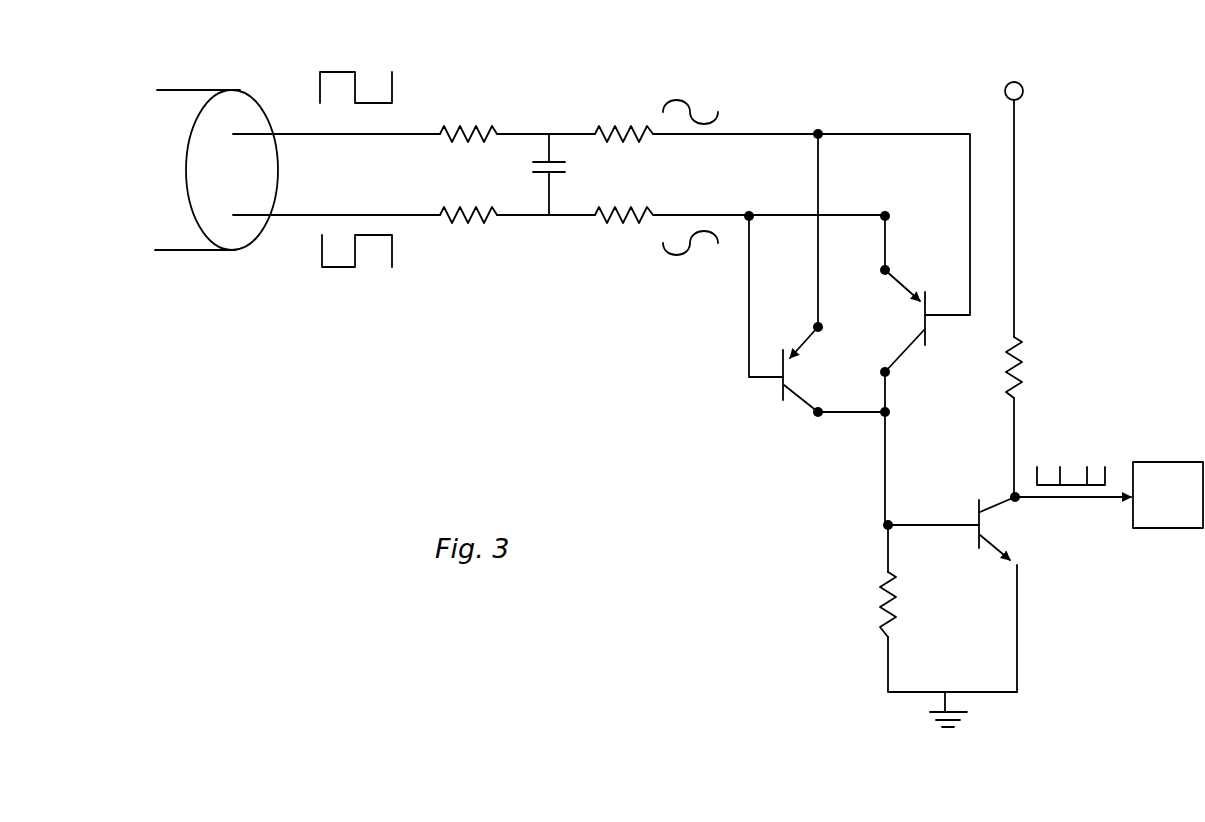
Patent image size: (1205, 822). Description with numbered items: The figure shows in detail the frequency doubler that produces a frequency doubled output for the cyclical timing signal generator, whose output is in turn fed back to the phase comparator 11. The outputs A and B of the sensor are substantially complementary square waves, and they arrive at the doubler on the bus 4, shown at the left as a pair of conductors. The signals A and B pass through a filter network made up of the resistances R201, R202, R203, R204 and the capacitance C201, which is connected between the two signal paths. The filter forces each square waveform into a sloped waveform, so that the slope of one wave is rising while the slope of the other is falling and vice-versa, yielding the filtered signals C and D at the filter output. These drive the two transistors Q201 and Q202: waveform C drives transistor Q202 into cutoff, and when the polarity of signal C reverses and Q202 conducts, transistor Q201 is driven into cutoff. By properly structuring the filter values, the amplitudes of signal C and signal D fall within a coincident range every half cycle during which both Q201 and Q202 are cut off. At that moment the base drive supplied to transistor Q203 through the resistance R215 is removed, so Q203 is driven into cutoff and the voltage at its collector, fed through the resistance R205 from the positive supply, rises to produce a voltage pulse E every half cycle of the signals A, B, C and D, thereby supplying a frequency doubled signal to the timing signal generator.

The bus 4 is at (246, 104).
The sensor output signal A is at (348, 72).
The sensor output signal B is at (340, 267).
The filtered waveform C is at (690, 105).
The filtered waveform D is at (690, 246).
The voltage pulse E is at (1062, 462).
The phase comparator 11 is at (1133, 522).
The resistance R201 is at (481, 118).
The resistance R202 is at (621, 118).
The resistance R203 is at (475, 228).
The resistance R204 is at (624, 228).
The capacitance C201 is at (575, 174).
The transistor Q201 is at (809, 281).
The transistor Q202 is at (934, 370).
The transistor Q203 is at (952, 594).
The resistance R205 is at (979, 417).
The resistance R215 is at (912, 608).